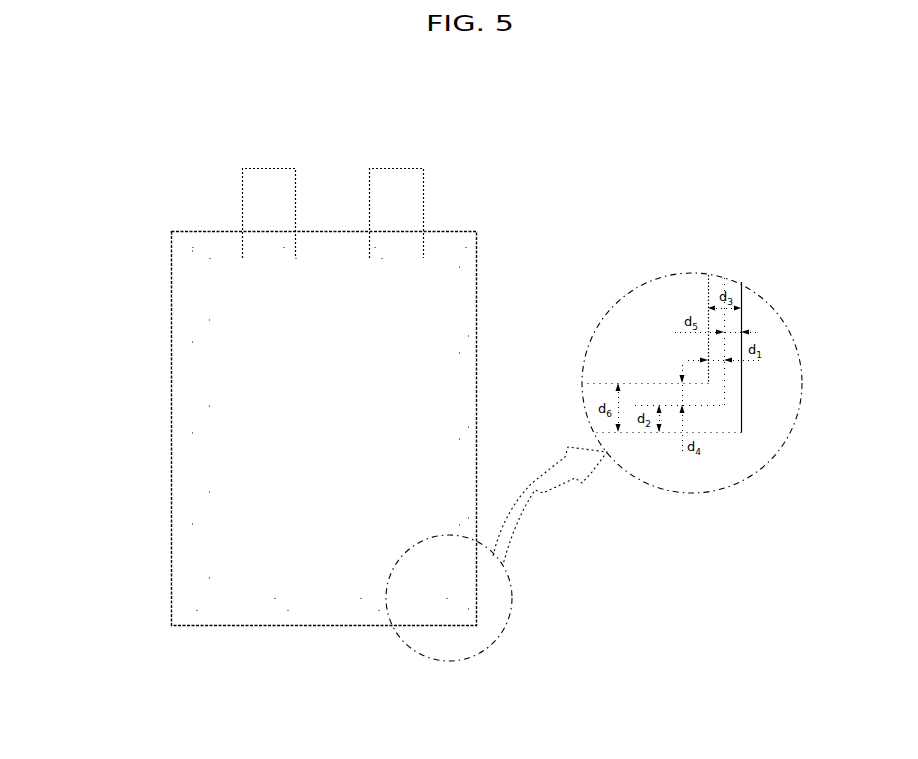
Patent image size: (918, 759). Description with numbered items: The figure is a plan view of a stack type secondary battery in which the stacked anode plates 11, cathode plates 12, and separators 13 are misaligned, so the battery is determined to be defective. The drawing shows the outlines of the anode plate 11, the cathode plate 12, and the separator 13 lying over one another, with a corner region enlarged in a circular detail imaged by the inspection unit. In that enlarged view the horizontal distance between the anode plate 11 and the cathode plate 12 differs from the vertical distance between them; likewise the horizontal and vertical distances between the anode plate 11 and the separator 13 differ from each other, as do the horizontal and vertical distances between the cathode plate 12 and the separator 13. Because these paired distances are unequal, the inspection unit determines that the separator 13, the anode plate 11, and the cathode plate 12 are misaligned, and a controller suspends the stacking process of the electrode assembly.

The anode plate 11 is at (190, 397).
The cathode plate 12 is at (477, 337).
The separator 13 is at (477, 283).